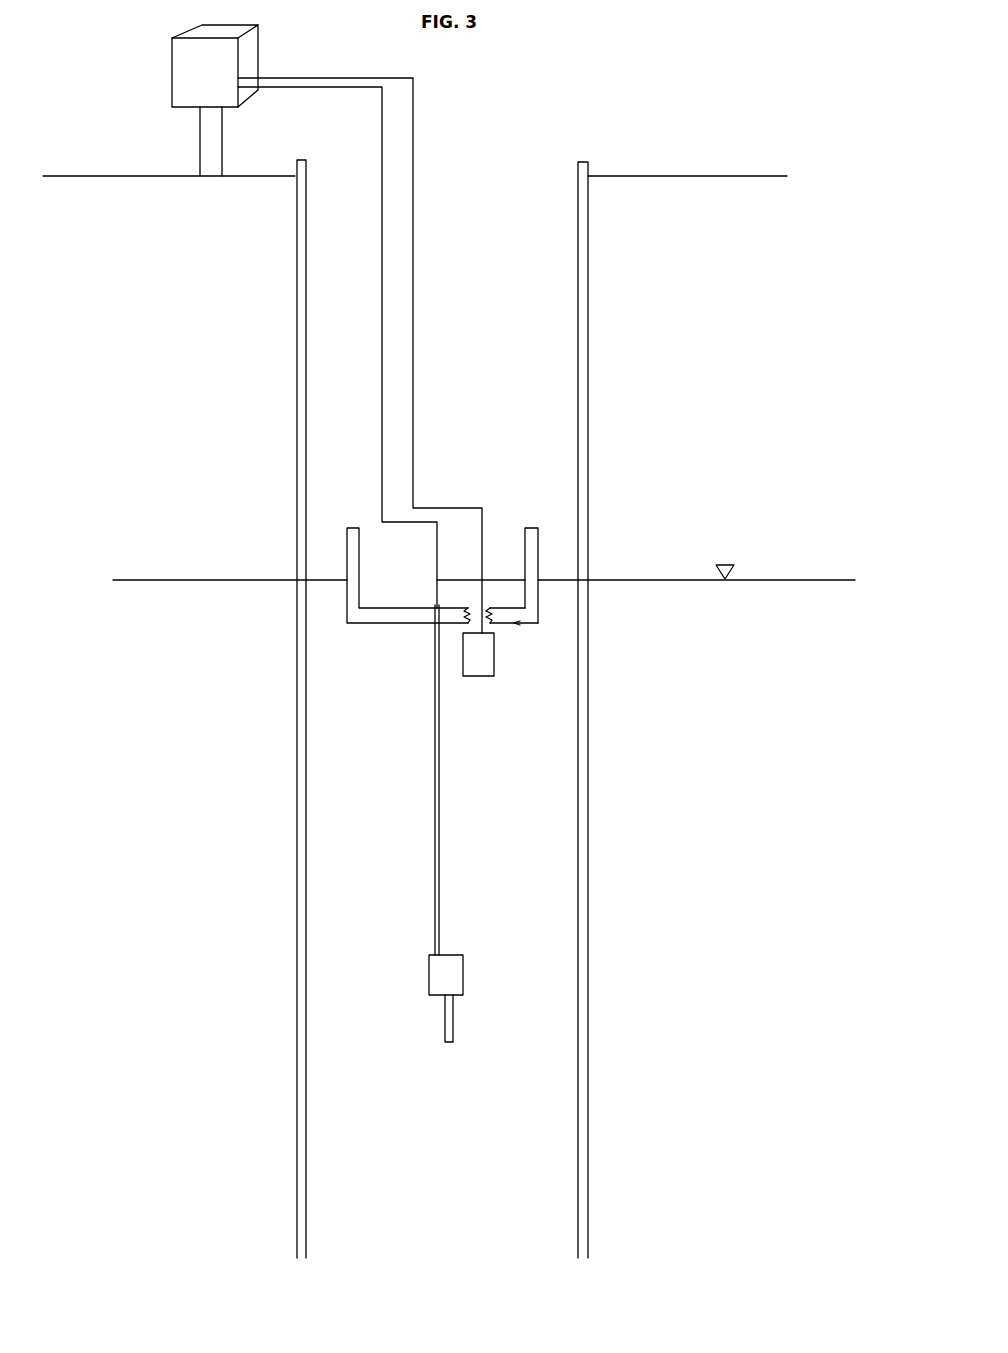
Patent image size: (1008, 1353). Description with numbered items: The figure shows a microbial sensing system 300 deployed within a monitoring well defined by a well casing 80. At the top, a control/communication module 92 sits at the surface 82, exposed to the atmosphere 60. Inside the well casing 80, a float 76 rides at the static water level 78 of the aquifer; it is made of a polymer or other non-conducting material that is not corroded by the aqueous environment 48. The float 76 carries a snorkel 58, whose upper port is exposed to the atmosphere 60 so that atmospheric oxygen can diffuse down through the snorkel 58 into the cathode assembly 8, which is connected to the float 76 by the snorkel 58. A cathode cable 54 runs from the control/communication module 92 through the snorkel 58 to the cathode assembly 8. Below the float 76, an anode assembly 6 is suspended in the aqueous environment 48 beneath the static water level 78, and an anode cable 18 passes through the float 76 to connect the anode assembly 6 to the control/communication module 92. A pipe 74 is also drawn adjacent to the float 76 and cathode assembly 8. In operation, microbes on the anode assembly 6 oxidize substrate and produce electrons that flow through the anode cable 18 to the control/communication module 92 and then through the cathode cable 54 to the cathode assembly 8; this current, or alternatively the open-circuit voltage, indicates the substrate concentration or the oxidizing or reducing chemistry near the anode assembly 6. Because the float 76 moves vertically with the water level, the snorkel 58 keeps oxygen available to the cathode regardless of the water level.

The microbial sensing system 300 is at (764, 108).
The atmosphere 60 is at (632, 46).
The surface 82 is at (145, 176).
The well casing 80 is at (588, 275).
The control/communication module 92 is at (172, 96).
The cathode cable 54 is at (482, 541).
The snorkel 58 is at (381, 530).
The static water level 78 is at (484, 560).
The aqueous environment 48 is at (786, 654).
The float 76 is at (538, 556).
The discharge pipe 74 is at (512, 603).
The cathode assembly 8 is at (485, 676).
The anode cable 18 is at (440, 820).
The anode assembly 6 is at (464, 989).